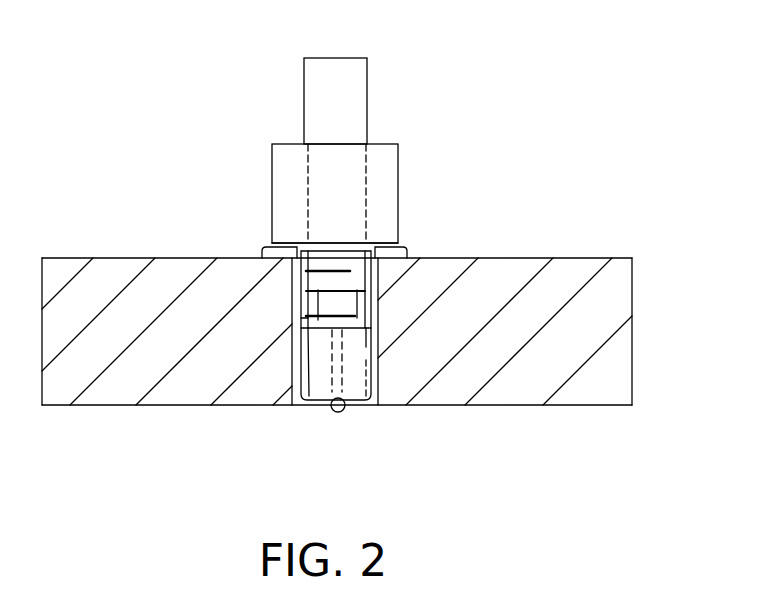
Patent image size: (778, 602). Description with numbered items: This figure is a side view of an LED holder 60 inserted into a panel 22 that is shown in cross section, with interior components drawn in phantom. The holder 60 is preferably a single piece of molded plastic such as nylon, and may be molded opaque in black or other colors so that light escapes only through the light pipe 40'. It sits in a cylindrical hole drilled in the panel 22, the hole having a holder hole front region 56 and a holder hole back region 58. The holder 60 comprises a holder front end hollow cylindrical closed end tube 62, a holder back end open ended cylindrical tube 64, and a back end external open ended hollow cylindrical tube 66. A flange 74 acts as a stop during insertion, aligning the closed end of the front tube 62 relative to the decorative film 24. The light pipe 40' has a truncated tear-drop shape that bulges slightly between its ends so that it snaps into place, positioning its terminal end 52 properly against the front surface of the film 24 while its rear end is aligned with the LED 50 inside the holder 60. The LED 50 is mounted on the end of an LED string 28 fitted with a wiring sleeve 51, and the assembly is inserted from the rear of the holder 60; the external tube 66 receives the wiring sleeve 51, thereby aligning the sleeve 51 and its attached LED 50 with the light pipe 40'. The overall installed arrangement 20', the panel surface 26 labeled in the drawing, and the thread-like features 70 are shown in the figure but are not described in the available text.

The fastener assembly 20' is at (336, 311).
The panel 22 is at (605, 302).
The decorative film 24 is at (448, 407).
The panel top surface 26 is at (553, 256).
The LED string 28 is at (352, 94).
The light pipe 40' is at (388, 361).
The LED 50 is at (340, 282).
The wiring sleeve 51 is at (327, 197).
The terminal end 52 is at (340, 412).
The holder hole front region 56 is at (291, 365).
The holder hole back region 58 is at (394, 316).
The LED holder 60 is at (357, 136).
The holder front end hollow cylindrical closed end tube 62 is at (363, 347).
The holder back end open ended cylindrical tube 64 is at (297, 320).
The back end external open ended hollow cylindrical tube 66 is at (335, 181).
The threads 70 is at (310, 293).
The flange 74 is at (267, 252).